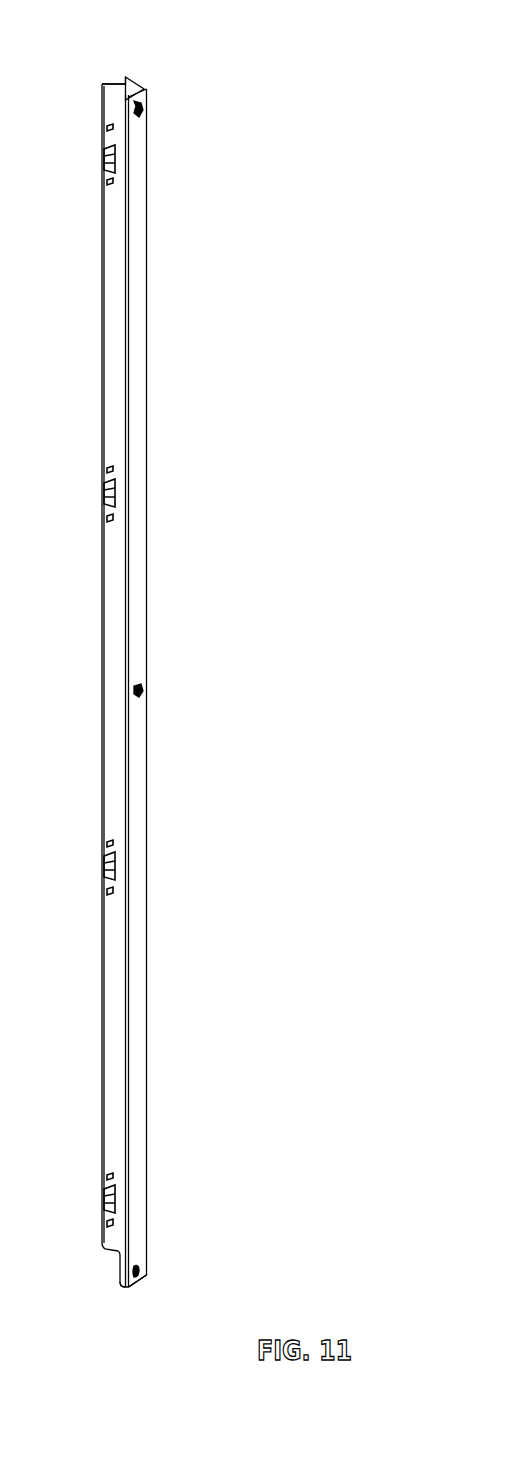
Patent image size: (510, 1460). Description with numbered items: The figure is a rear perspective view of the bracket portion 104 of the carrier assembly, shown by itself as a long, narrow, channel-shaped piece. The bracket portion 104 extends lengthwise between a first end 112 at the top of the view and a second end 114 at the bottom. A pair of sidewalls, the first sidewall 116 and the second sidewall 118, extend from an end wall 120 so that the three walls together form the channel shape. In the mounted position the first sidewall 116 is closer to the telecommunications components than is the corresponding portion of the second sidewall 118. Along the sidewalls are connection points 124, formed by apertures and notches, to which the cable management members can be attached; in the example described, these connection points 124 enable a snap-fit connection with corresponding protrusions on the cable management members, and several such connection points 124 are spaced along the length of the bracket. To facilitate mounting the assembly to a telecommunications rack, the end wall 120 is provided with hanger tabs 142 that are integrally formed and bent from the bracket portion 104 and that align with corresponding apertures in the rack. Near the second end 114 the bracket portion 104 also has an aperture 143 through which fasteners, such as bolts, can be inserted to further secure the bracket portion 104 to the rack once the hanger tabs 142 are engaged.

The bracket portion 104 is at (165, 682).
The first end 112 is at (128, 76).
The second end 114 is at (140, 1273).
The first sidewall 116 is at (120, 83).
The second sidewall 118 is at (110, 1015).
The end wall 120 is at (138, 183).
The connection points 124 is at (103, 158).
The hanger tabs 142 is at (143, 111).
The aperture 143 is at (145, 1276).